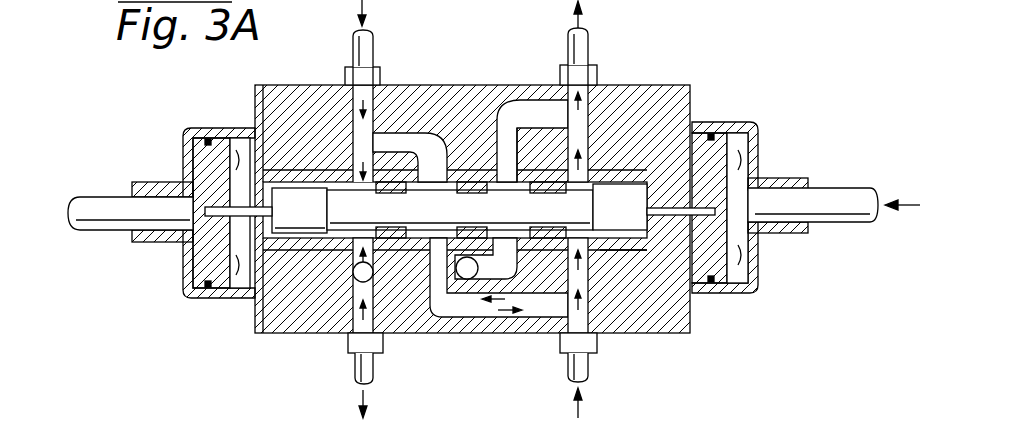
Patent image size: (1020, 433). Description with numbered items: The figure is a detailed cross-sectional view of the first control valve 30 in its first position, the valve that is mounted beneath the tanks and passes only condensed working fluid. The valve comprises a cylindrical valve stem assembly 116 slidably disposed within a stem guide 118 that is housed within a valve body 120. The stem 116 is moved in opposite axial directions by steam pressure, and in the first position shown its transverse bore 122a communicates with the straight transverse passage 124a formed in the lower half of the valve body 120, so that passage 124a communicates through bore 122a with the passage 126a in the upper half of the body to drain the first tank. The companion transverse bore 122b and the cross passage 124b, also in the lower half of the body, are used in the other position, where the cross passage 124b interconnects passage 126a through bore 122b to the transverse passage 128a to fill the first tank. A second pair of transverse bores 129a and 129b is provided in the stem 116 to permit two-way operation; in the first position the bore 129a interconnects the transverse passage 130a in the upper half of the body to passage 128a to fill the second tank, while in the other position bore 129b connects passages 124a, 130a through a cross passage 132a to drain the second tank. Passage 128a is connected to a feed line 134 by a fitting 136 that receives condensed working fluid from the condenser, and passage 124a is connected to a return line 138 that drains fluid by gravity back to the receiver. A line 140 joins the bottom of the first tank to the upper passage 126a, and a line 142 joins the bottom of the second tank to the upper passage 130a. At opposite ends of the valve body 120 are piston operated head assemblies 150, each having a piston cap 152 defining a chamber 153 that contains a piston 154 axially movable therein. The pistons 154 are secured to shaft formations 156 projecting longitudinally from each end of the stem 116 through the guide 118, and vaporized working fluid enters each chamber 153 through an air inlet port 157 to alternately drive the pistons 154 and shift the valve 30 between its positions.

The first control valve 30 is at (160, 330).
The cylindrical valve stem assembly 116 is at (618, 192).
The stem guide 118 is at (632, 248).
The valve body 120 is at (460, 84).
The transverse bore 122a is at (350, 165).
The transverse bore 122b is at (472, 154).
The straight transverse passage 124a is at (312, 334).
The cross passage 124b is at (428, 318).
The passage 126a is at (378, 97).
The transverse passage 128a is at (593, 334).
The transverse bore 129a is at (560, 228).
The transverse bore 129b is at (527, 168).
The transverse passage 130a is at (593, 86).
The cross passage 132a is at (520, 100).
The feed line 134 is at (566, 368).
The fitting 136 is at (562, 343).
The return line 138 is at (357, 372).
The line 140 is at (352, 48).
The line 142 is at (590, 40).
The piston operated head assembly 150 is at (210, 310).
The piston cap 152 is at (182, 282).
The chamber 153 is at (744, 256).
The piston 154 is at (207, 242).
The shaft formation 156 is at (238, 205).
The air inlet port 157 is at (142, 200).